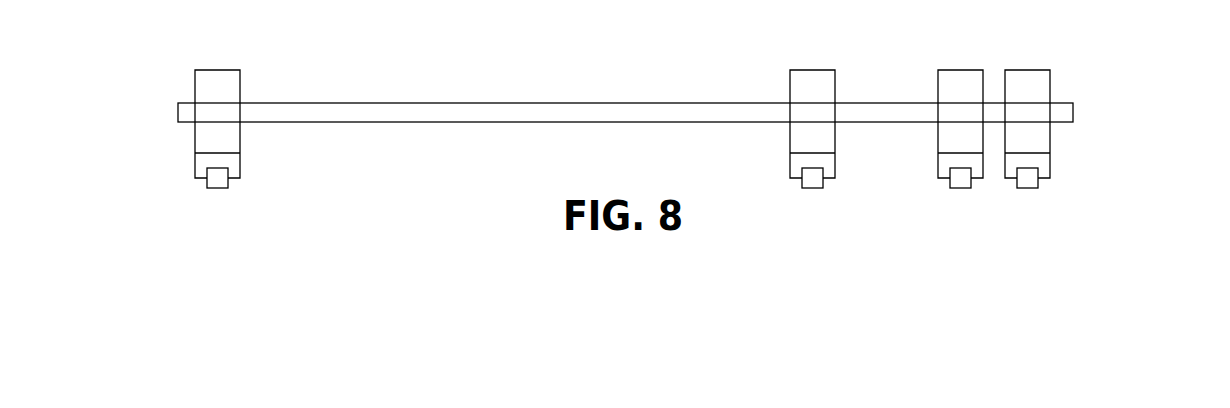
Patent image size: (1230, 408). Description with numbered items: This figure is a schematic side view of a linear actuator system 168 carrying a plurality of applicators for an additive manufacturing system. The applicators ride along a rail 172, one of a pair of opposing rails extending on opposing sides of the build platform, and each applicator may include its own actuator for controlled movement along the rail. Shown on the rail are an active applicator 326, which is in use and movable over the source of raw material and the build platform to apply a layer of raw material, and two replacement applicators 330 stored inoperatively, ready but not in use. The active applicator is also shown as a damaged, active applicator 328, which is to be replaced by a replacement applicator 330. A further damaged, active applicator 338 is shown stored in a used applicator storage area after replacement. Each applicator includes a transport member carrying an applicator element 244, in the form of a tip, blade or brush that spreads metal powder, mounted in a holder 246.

The linear actuator system 168 is at (1090, 104).
The rail 172 is at (483, 111).
The applicator element 244 is at (798, 203).
The holder 246 is at (825, 157).
The active applicator 326 is at (762, 170).
The damaged, active applicator 328 is at (812, 140).
The replacement applicator 330 is at (1064, 138).
The damaged, active applicator 338 is at (250, 140).